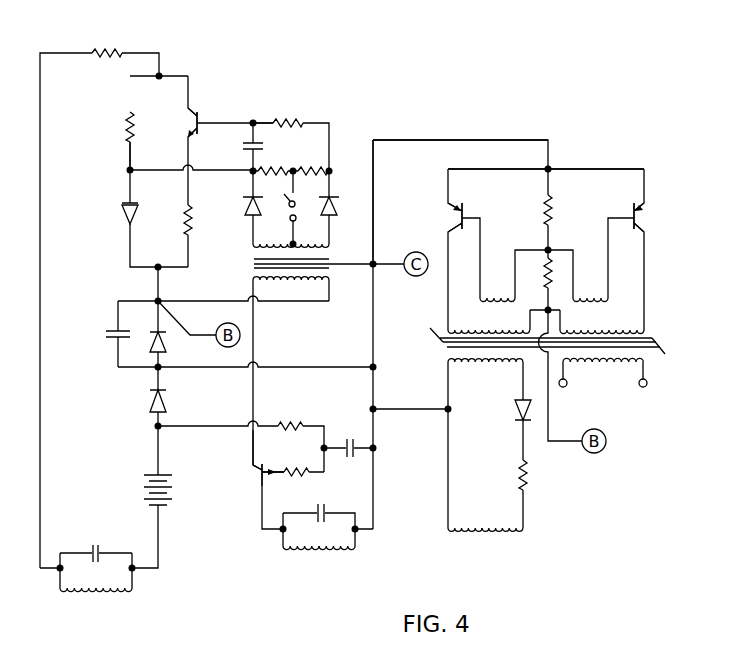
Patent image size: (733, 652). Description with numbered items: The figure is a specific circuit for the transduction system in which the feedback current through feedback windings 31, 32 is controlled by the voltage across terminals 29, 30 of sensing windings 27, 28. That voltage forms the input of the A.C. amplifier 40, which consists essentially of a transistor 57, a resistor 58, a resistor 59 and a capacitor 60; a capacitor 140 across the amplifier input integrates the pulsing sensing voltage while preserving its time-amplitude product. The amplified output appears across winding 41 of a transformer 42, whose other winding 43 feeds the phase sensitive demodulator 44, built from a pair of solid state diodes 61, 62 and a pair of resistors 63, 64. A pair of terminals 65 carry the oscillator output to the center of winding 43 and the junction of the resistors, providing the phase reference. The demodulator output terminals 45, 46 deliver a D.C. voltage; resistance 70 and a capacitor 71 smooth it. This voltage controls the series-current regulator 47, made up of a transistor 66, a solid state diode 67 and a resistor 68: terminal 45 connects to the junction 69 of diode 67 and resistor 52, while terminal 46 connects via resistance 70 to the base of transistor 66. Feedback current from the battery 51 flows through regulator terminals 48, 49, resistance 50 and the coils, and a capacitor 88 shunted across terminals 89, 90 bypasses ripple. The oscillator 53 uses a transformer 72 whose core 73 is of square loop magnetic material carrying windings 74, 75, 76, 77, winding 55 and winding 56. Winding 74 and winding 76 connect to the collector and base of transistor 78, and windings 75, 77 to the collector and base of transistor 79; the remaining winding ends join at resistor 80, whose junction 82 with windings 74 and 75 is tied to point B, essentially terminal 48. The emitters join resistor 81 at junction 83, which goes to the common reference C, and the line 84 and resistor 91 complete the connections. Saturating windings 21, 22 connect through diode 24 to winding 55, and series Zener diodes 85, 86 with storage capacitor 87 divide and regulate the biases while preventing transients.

The resistance 50 is at (109, 51).
The regulator terminal 49 is at (162, 74).
The resistor 52 is at (127, 125).
The series-current regulator 47 is at (116, 172).
The junction 69 is at (133, 169).
The transistor 66 is at (194, 124).
The solid state diode 67 is at (122, 214).
The resistor 68 is at (185, 216).
The regulator terminal 48 is at (161, 269).
The resistance 70 is at (268, 118).
The phase sensitive demodulator 44 is at (296, 118).
The capacitor 71 is at (247, 147).
The resistor 64 is at (273, 160).
The resistor 63 is at (313, 160).
The demodulator output terminal 45 is at (251, 173).
The demodulator output terminal 46 is at (332, 171).
The solid state diode 61 is at (252, 208).
The solid state diode 62 is at (333, 215).
The terminals 65 is at (290, 201).
The winding 43 is at (290, 243).
The transformer 42 is at (252, 264).
The winding 41 is at (304, 282).
The storage capacitor 87 is at (113, 336).
The Zener diode 85 is at (166, 346).
The Zener diode 86 is at (149, 406).
The battery 51 is at (172, 490).
The capacitor 88 is at (92, 548).
The terminal 89 is at (57, 571).
The terminal 90 is at (136, 571).
The feedback winding 31 is at (72, 590).
The feedback winding 32 is at (106, 590).
The A.C. amplifier 40 is at (250, 453).
The transistor 57 is at (260, 478).
The resistor 59 is at (289, 424).
The resistor 58 is at (291, 466).
The capacitor 60 is at (351, 459).
The capacitor 140 is at (323, 514).
The terminal 29 is at (280, 531).
The terminal 30 is at (362, 531).
The sensing winding 27 is at (298, 549).
The sensing winding 28 is at (340, 549).
The conductor 84 is at (406, 140).
The oscillator 53 is at (552, 167).
The junction 83 is at (550, 172).
The transistor 78 is at (460, 208).
The transistor 79 is at (633, 213).
The resistor 81 is at (543, 210).
The resistor 80 is at (545, 288).
The winding 76 is at (497, 300).
The winding 77 is at (586, 300).
The winding 74 is at (472, 327).
The winding 75 is at (616, 327).
The junction 82 is at (552, 310).
The core 73 is at (453, 333).
The transformer 72 is at (440, 344).
The winding 55 is at (490, 364).
The diode 24 is at (514, 410).
The resistor 91 is at (518, 470).
The saturating winding 22 is at (465, 532).
The saturating winding 21 is at (511, 532).
The winding 56 is at (598, 364).